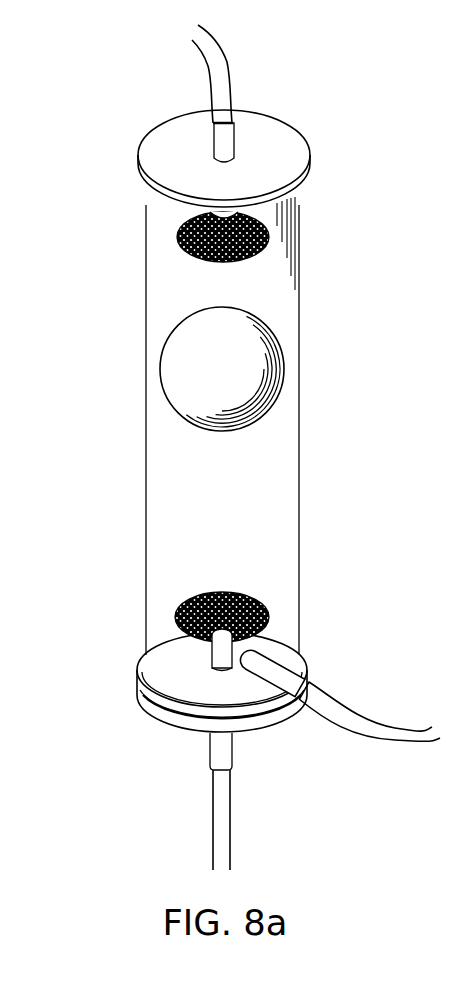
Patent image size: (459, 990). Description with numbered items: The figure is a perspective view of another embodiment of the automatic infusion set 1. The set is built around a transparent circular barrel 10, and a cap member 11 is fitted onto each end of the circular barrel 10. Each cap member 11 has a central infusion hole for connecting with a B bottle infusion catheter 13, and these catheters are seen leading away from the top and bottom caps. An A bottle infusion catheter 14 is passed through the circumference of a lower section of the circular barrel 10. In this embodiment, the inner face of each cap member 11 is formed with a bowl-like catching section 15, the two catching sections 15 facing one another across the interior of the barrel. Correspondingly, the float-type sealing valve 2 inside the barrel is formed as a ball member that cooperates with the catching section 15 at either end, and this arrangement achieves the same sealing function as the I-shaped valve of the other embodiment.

The automatic infusion set 1 is at (142, 348).
The sealing valve 2 is at (285, 372).
The circular barrel 10 is at (147, 432).
The cap member 11 is at (296, 147).
The B bottle infusion catheter 13 is at (224, 64).
The A bottle infusion catheter 14 is at (353, 733).
The catching section 15 is at (268, 240).